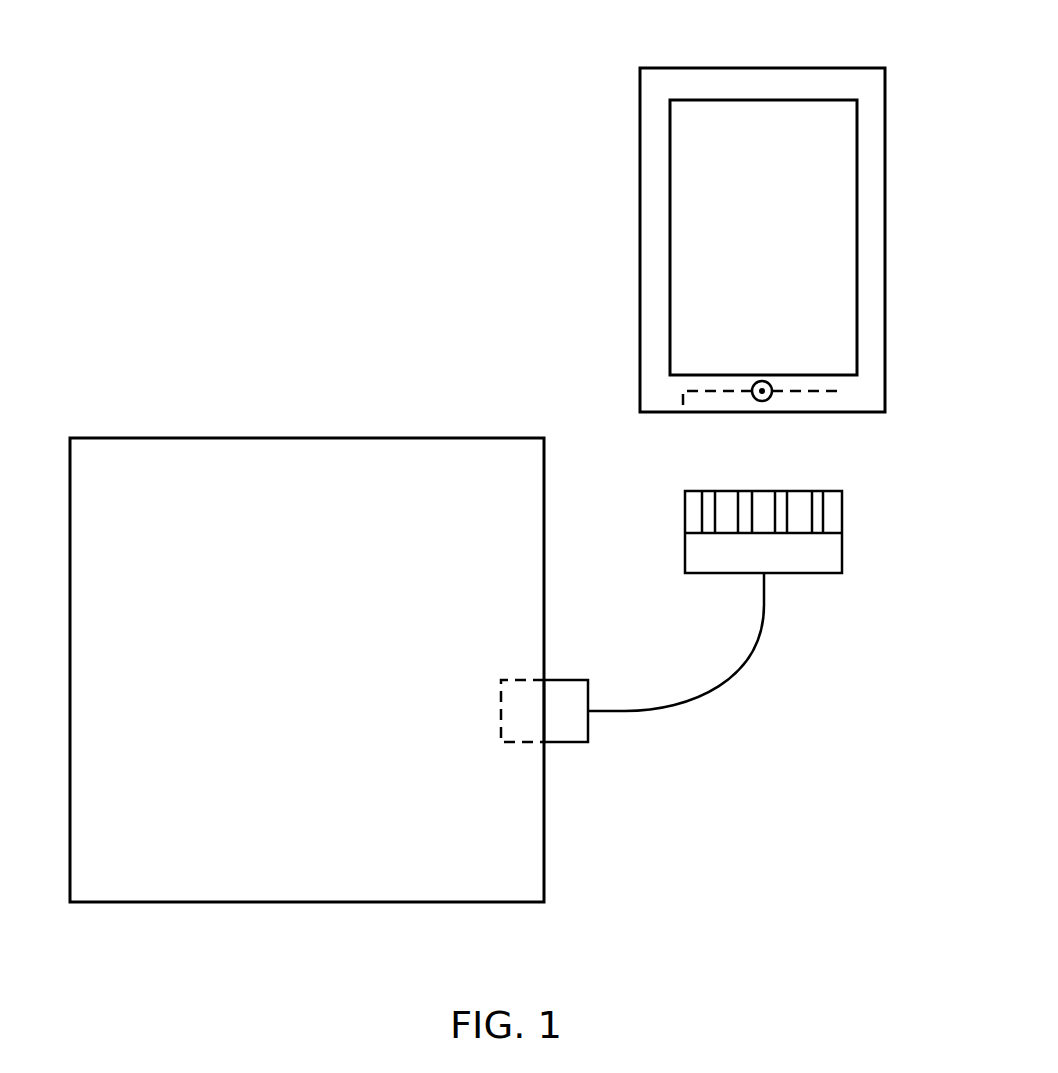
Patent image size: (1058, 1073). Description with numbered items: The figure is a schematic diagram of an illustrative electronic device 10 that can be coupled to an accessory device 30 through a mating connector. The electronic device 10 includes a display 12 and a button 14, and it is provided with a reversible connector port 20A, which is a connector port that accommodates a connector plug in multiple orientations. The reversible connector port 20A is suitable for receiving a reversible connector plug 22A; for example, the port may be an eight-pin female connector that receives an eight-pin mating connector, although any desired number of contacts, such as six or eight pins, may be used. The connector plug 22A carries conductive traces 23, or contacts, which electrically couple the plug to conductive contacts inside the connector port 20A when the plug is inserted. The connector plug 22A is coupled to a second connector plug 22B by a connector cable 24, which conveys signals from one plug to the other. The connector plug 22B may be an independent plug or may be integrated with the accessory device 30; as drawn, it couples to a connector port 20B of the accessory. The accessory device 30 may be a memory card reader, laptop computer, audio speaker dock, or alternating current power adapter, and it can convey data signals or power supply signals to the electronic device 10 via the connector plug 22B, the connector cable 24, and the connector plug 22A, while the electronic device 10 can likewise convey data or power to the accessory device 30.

The electronic device 10 is at (755, 68).
The display 12 is at (820, 100).
The button 14 is at (762, 381).
The reversible connector port 20A is at (838, 399).
The connector port 20B is at (518, 742).
The reversible connector plug 22A is at (842, 549).
The connector plug 22B is at (572, 680).
The conductive traces 23 is at (815, 496).
The connector cable 24 is at (747, 667).
The accessory device 30 is at (150, 438).